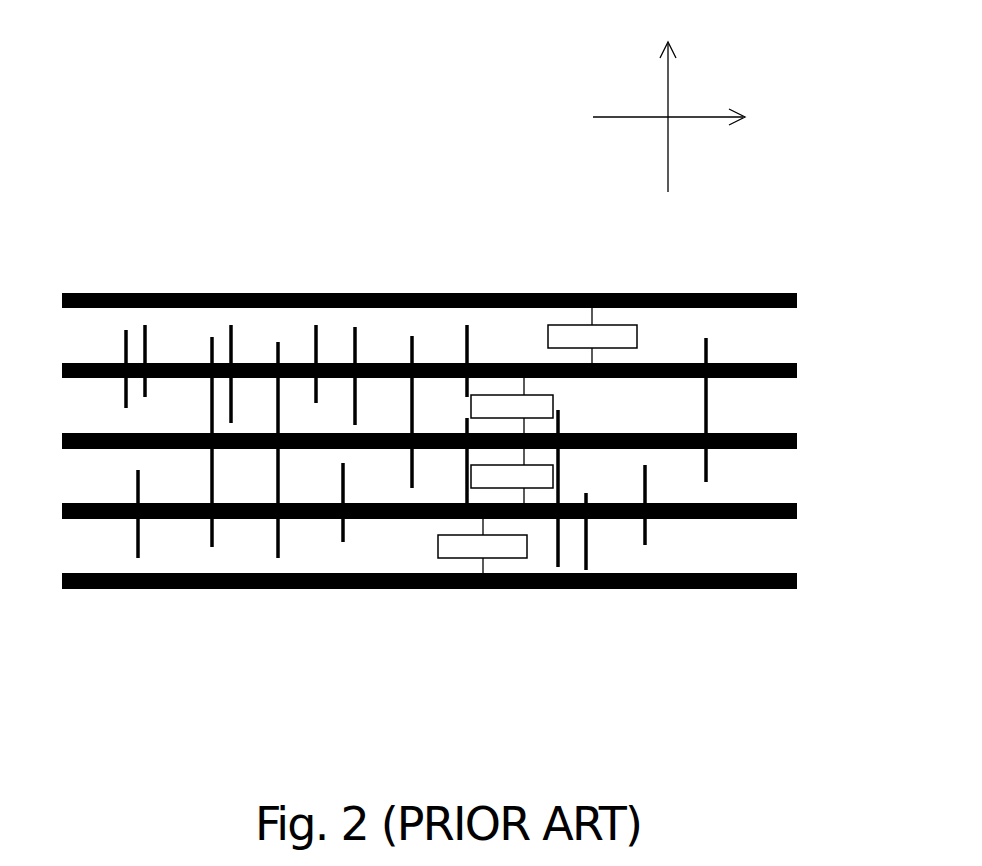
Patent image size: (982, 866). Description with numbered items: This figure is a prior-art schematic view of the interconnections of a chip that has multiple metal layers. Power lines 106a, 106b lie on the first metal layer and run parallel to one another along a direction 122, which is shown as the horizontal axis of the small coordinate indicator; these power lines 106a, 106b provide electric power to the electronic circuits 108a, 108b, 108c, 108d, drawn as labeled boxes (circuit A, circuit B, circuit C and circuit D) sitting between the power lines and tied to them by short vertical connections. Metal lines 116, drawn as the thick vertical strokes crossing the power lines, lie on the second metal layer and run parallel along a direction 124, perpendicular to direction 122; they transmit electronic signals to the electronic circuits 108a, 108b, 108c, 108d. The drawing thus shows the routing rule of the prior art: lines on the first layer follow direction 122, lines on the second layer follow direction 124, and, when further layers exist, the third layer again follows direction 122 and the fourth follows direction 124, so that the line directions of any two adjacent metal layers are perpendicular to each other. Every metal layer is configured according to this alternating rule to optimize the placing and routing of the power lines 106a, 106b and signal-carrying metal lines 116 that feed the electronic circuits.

The power line 106a is at (62, 367).
The power line 106b is at (797, 300).
The electronic circuit 108a is at (617, 324).
The electronic circuit 108b is at (492, 393).
The electronic circuit 108c is at (538, 488).
The electronic circuit 108d is at (458, 558).
The metal line 116 is at (231, 325).
The direction 122 is at (687, 116).
The direction 124 is at (668, 104).